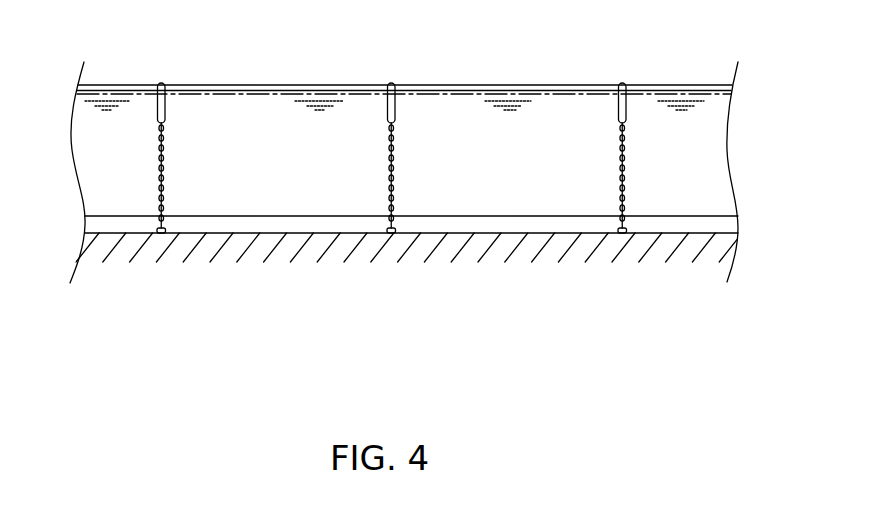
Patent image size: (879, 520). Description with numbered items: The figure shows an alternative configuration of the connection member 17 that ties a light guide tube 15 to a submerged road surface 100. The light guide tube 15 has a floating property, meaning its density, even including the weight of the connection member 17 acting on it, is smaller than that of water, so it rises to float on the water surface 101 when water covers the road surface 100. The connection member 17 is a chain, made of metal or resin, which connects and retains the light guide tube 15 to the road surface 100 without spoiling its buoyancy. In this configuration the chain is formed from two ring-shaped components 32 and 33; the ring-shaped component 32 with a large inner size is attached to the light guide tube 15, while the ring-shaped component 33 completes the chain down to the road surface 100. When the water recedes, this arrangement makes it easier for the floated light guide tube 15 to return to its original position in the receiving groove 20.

The light guide tube 15 is at (300, 85).
The connection member 17 is at (392, 119).
The receiving groove 20 is at (322, 225).
The ring-shaped component 32 is at (165, 110).
The ring-shaped component 33 is at (163, 157).
The road surface 100 is at (500, 216).
The water surface 101 is at (553, 90).